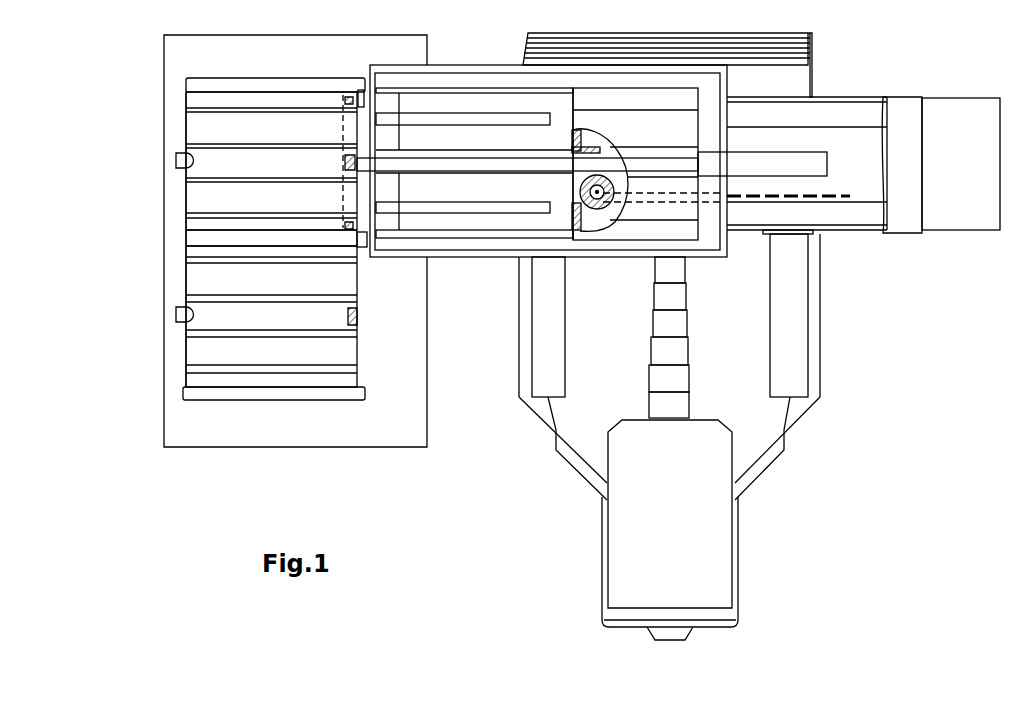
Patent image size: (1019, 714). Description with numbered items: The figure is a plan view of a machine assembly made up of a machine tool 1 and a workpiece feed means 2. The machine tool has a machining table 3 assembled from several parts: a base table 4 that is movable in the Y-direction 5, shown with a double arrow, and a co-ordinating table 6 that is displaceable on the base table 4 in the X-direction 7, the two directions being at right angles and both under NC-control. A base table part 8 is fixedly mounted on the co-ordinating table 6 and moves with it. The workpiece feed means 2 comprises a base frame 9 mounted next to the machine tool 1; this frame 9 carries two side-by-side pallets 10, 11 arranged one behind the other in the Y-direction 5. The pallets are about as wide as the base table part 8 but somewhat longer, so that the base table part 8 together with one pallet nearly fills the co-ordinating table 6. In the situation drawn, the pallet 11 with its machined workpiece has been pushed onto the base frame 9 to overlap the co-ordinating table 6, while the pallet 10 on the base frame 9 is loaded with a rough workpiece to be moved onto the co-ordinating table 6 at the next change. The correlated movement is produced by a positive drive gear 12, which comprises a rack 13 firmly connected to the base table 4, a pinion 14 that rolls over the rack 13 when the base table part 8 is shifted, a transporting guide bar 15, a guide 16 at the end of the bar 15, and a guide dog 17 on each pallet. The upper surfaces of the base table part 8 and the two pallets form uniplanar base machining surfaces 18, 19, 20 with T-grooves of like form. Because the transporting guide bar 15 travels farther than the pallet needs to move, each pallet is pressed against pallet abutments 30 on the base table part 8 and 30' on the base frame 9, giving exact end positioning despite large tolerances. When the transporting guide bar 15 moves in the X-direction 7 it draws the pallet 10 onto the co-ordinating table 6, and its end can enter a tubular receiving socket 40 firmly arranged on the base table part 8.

The machine tool 1 is at (748, 420).
The workpiece feed means 2 is at (325, 390).
The machining table 3 is at (824, 85).
The base table 4 is at (852, 215).
The Y-direction 5 is at (845, 274).
The co-ordinating table 6 is at (700, 240).
The X-direction 7 is at (452, 51).
The base table part 8 is at (652, 240).
The base frame 9 is at (280, 420).
The pallet 10 is at (210, 97).
The pallet 11 is at (240, 377).
The positive drive gear 12 is at (598, 238).
The rack 13 is at (753, 200).
The pinion 14 is at (576, 186).
The transporting guide bar 15 is at (476, 166).
The guide 16 is at (348, 160).
The guide dog 17 is at (348, 160).
The base machining surface 18 is at (632, 232).
The base machining surface 19 is at (208, 193).
The base machining surface 20 is at (205, 348).
The pallet abutment 30 is at (593, 115).
The pallet abutment 30' is at (151, 234).
The tubular receiving socket 40 is at (806, 163).